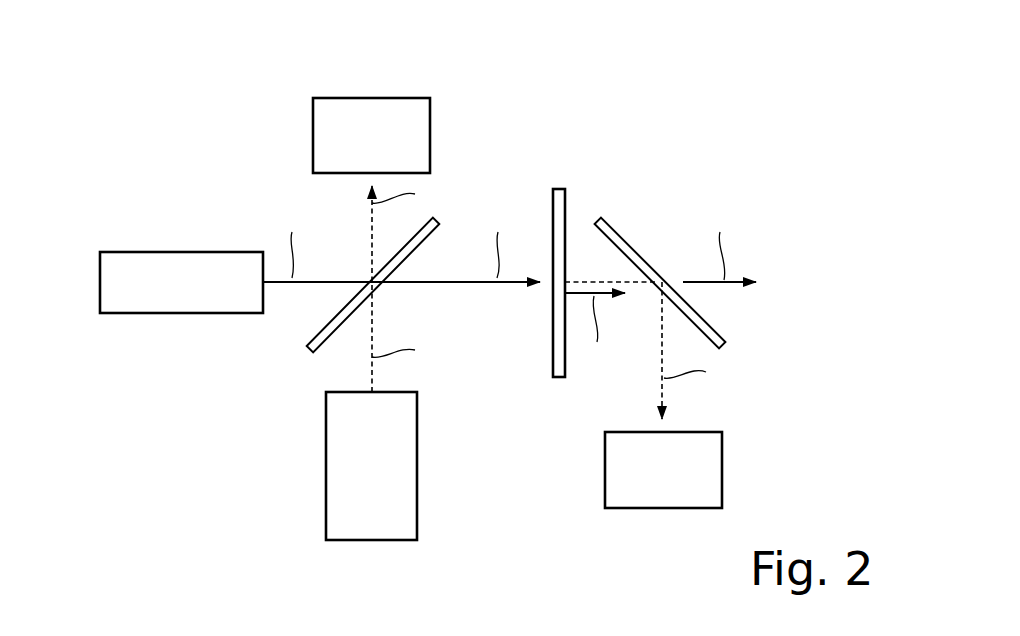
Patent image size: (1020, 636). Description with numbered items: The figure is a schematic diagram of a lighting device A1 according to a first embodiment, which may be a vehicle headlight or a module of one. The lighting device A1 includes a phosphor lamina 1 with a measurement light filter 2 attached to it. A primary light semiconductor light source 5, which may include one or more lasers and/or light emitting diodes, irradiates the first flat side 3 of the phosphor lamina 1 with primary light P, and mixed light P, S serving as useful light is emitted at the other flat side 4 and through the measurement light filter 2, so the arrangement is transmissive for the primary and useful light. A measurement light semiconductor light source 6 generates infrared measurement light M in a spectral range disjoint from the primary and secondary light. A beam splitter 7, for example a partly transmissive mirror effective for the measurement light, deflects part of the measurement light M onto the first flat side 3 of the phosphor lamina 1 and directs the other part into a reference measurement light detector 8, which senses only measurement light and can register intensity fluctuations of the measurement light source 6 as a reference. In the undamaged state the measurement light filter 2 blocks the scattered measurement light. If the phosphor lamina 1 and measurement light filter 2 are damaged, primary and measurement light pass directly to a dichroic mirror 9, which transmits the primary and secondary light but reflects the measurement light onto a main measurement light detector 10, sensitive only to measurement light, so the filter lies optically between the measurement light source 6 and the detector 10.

The lighting device A1 is at (138, 71).
The phosphor lamina 1 is at (558, 242).
The measurement light filter 2 is at (558, 242).
The first flat side 3 is at (558, 268).
The other flat side 4 is at (566, 205).
The primary light semiconductor light source 5 is at (98, 282).
The measurement light semiconductor light source 6 is at (325, 477).
The beam splitter 7 is at (308, 332).
The reference measurement light detector 8 is at (312, 140).
The dichroic mirror 9 is at (623, 232).
The measurement light detector 10 is at (724, 465).